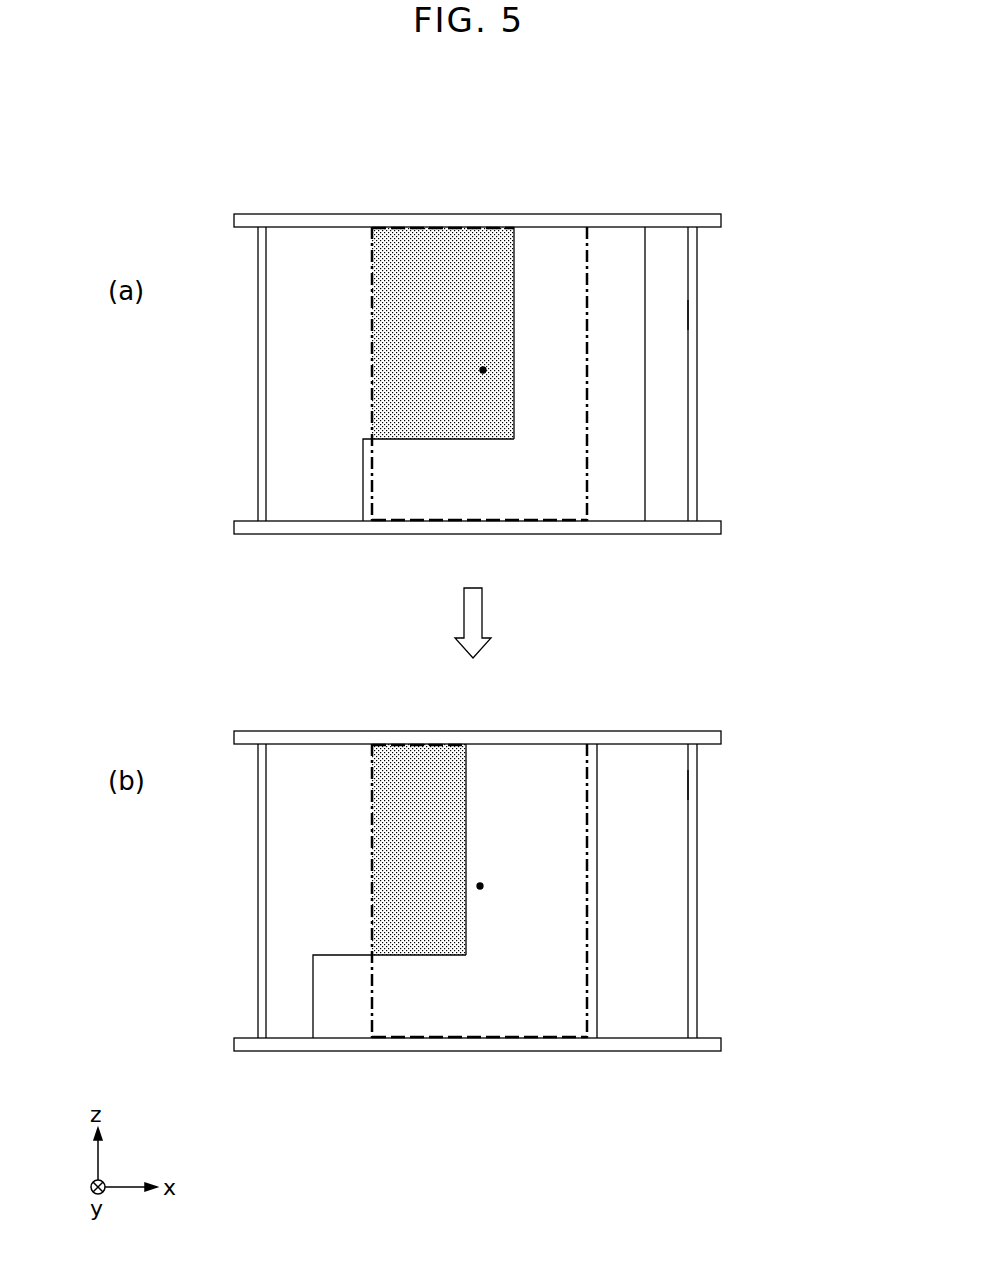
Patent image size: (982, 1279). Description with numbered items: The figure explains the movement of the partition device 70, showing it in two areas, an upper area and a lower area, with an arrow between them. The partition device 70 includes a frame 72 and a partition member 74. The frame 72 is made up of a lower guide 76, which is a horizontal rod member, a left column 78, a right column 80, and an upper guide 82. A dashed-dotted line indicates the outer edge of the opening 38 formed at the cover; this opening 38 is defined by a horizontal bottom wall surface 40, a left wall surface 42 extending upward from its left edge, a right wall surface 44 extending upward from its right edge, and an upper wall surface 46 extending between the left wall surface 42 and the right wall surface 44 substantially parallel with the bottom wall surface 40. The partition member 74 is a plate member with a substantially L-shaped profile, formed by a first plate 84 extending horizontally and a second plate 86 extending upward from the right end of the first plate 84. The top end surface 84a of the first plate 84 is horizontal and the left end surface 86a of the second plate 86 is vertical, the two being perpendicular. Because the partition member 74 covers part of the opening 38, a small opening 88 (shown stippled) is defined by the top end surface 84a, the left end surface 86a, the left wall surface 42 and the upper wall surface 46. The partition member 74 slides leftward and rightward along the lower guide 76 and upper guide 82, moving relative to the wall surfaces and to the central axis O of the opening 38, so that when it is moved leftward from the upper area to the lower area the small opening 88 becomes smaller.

The partition device 70 is at (834, 125).
The upper guide 82 is at (657, 218).
The lower guide 76 is at (315, 531).
The left column 78 is at (260, 349).
The frame 72 is at (697, 431).
The right column 80 is at (694, 313).
The partition member 74 is at (645, 489).
The second plate 86 is at (625, 281).
The left end surface 86a is at (513, 282).
The small opening 88 is at (453, 307).
The first plate 84 is at (398, 509).
The top end surface 84a is at (478, 440).
The upper wall surface 46 is at (430, 228).
The opening 38 is at (585, 281).
The left wall surface 42 is at (363, 497).
The bottom wall surface 40 is at (539, 512).
The right wall surface 44 is at (585, 322).
The central axis O is at (483, 370).